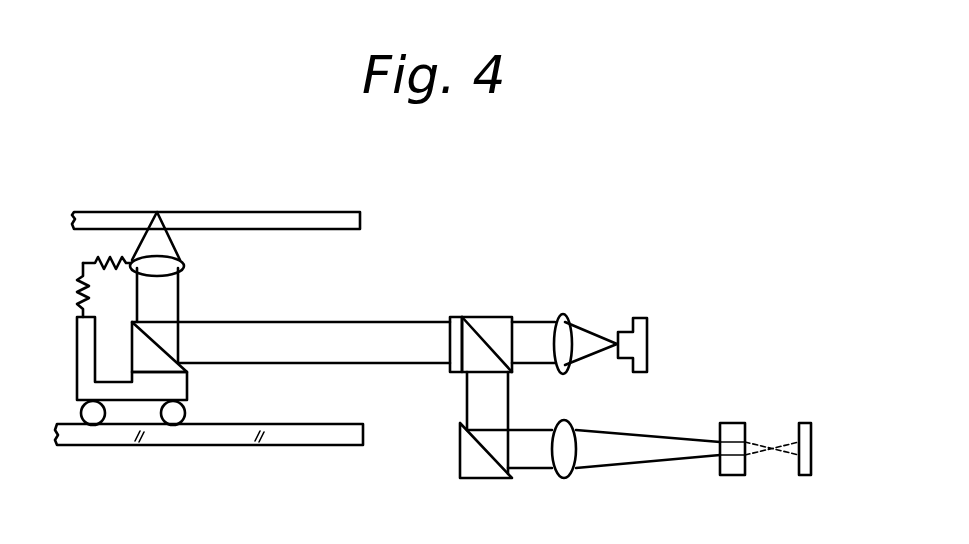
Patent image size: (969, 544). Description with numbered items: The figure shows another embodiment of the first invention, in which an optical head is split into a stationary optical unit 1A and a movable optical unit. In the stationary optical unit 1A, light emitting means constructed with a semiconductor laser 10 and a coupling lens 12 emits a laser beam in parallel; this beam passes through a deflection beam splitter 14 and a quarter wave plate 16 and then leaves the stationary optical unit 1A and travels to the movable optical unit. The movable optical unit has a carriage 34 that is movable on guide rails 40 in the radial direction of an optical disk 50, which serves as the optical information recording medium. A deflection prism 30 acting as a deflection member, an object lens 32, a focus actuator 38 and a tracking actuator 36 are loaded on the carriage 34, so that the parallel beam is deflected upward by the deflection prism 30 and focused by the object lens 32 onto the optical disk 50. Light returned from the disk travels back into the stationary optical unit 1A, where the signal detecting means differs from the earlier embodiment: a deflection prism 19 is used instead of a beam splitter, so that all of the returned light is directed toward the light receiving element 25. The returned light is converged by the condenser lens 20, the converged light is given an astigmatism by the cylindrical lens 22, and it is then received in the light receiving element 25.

The stationary optical unit 1A is at (650, 291).
The semiconductor laser 10 is at (648, 340).
The coupling lens 12 is at (571, 318).
The deflection beam splitter 14 is at (508, 316).
The quarter wave plate 16 is at (456, 316).
The deflection prism 19 is at (497, 472).
The condenser lens 20 is at (567, 478).
The cylindrical lens 22 is at (730, 476).
The light receiving element 25 is at (805, 476).
The deflection prism 30 is at (138, 349).
The object lens 32 is at (180, 264).
The carriage 34 is at (178, 387).
The tracking actuator 36 is at (102, 255).
The focus actuator 38 is at (74, 292).
The guide rails 40 is at (300, 436).
The optical disk 50 is at (300, 217).